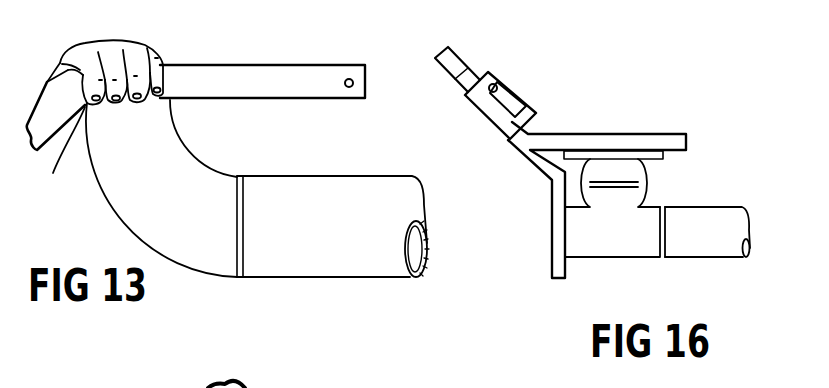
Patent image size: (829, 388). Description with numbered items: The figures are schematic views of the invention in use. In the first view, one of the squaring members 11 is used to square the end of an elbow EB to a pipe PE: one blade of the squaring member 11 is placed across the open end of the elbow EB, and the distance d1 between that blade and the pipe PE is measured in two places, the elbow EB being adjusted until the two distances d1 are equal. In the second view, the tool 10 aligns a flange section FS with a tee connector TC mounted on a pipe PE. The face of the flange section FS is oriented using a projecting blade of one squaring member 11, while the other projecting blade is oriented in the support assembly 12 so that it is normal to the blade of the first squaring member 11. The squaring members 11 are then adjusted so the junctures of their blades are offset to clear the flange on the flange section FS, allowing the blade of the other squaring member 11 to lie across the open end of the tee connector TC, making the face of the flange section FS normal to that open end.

In FIG. 16, the tool 10 is at (523, 73).
In FIG. 13, the squaring member 11 is at (191, 65).
In FIG. 16, the squaring member 11 is at (597, 133).
In FIG. 16, the support assembly 12 is at (536, 96).
In FIG. 13, the elbow EB is at (117, 188).
In FIG. 13, the pipe PE is at (353, 265).
In FIG. 16, the pipe PE is at (696, 249).
In FIG. 16, the flange section FS is at (666, 161).
In FIG. 16, the tee connector TC is at (601, 250).
In FIG. 13, the distance d1 is at (248, 101).